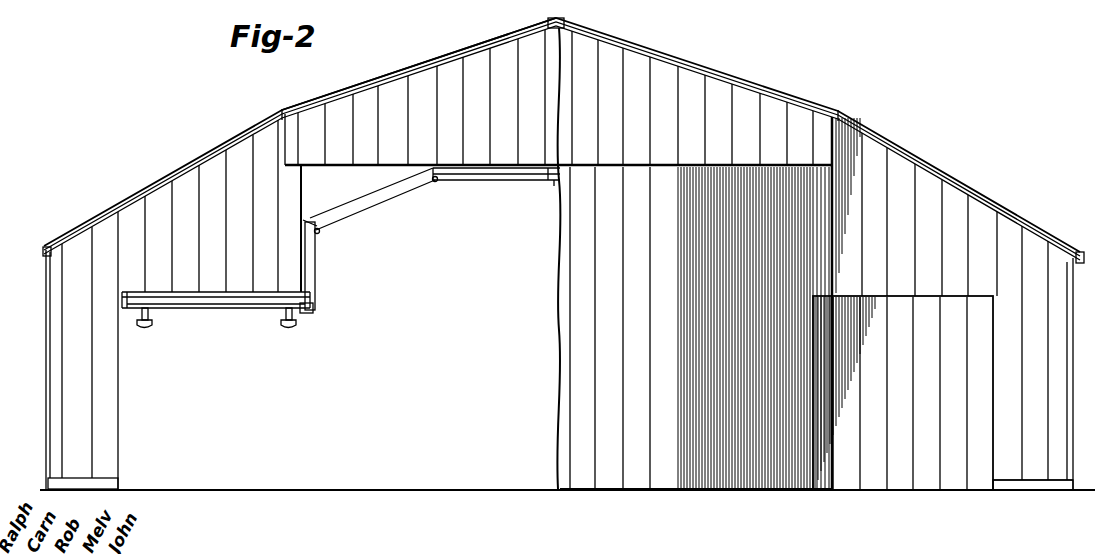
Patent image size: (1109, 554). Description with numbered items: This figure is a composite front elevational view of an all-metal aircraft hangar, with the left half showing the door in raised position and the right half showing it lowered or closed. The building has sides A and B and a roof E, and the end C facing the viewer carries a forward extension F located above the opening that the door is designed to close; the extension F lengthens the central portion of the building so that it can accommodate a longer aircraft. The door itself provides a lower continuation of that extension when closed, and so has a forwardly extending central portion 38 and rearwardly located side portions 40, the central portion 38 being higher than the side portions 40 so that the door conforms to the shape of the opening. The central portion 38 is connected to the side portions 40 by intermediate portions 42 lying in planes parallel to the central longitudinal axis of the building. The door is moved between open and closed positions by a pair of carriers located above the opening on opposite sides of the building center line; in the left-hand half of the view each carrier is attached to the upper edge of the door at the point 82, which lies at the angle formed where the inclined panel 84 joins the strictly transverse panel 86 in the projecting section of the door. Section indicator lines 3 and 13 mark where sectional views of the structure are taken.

The section line 3- 3 is at (44, 280).
The section line 13- 13 is at (208, 247).
The central portion 38 is at (462, 180).
The side portions 40 is at (225, 298).
The intermediate portions 42 is at (306, 262).
The point of carrier attachment 82 is at (432, 167).
The inclined panel 84 is at (308, 219).
The transverse panel 86 is at (547, 178).
The side A is at (47, 380).
The side B is at (1068, 340).
The end C is at (1028, 477).
The roof E is at (455, 50).
The forward extension F is at (671, 77).